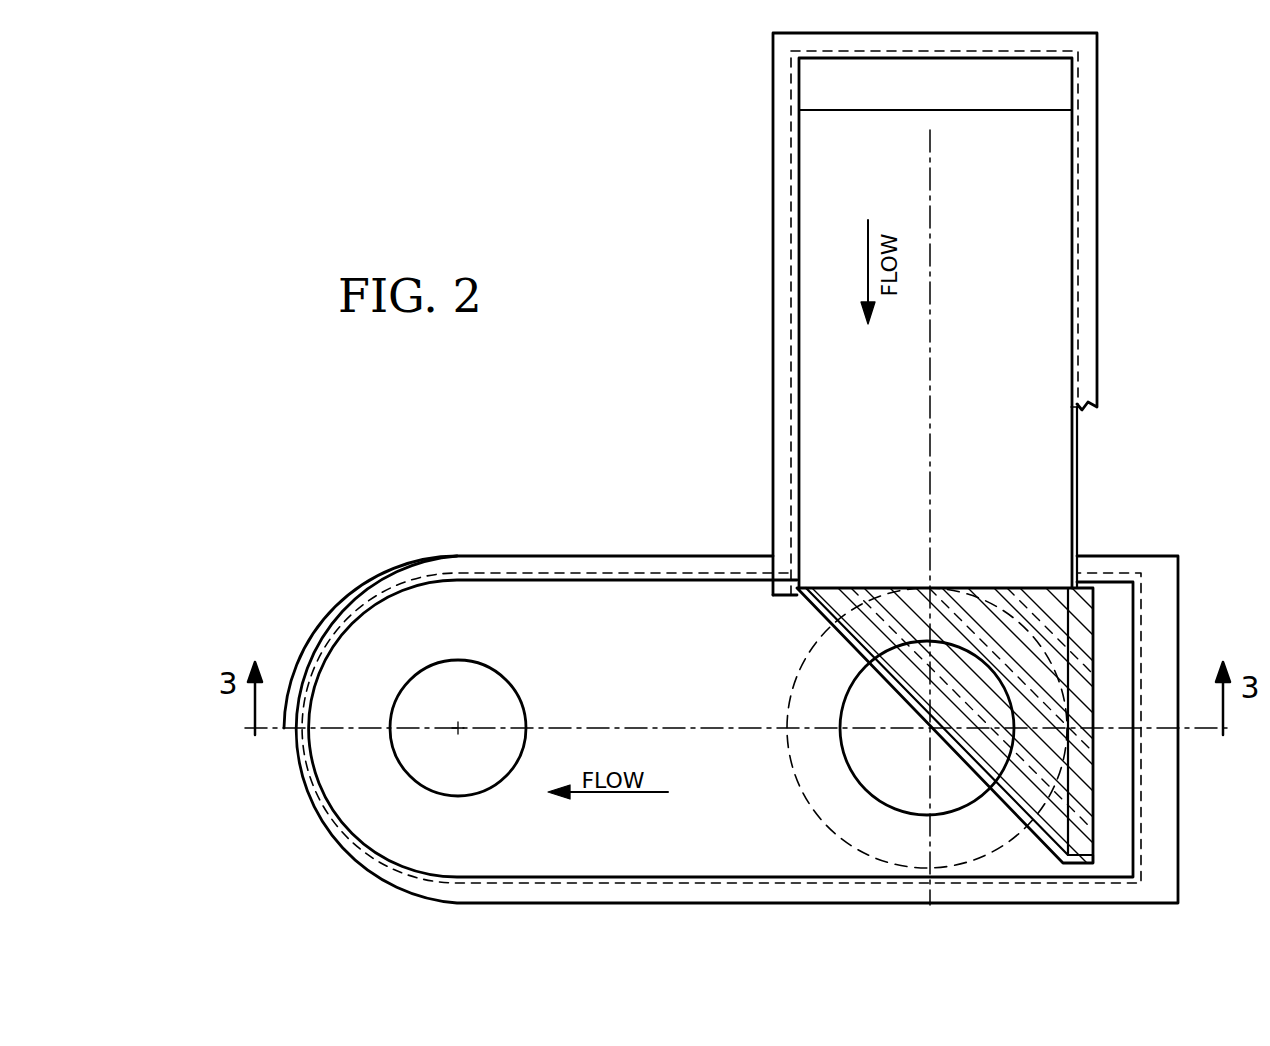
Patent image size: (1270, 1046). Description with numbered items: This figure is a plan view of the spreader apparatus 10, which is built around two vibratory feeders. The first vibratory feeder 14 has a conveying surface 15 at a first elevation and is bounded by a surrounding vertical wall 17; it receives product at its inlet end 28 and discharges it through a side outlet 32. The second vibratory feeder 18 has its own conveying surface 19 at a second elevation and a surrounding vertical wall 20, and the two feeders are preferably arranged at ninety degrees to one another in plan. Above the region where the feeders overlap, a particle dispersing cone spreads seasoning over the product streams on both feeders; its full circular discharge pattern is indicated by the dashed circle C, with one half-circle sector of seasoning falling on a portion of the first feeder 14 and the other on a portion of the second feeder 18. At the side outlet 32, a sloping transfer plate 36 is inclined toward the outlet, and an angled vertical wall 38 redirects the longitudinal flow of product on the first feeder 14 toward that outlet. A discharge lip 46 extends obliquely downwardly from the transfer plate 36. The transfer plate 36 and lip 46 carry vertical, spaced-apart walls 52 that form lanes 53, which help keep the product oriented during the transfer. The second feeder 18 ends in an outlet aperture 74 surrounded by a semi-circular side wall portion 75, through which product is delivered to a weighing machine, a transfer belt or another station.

The apparatus 10 is at (1130, 289).
The first vibratory feeder 14 is at (1062, 458).
The conveying surface 15 is at (1050, 386).
The surrounding vertical wall 17 is at (1072, 236).
The second vibratory feeder 18 is at (624, 548).
The conveying surface 19 is at (676, 600).
The surrounding vertical wall 20 is at (535, 588).
The inlet end 28 is at (1003, 124).
The side outlet 32 is at (1073, 598).
The sloping transfer plate 36 is at (1068, 800).
The angled vertical wall 38 is at (1055, 832).
The discharge lip 46 is at (1075, 853).
The vertical spaced-apart walls 52 is at (897, 598).
The lanes 53 is at (821, 596).
The outlet aperture 74 is at (418, 777).
The semi-circular side wall portion 75 is at (398, 596).
The dashed circle C is at (792, 690).